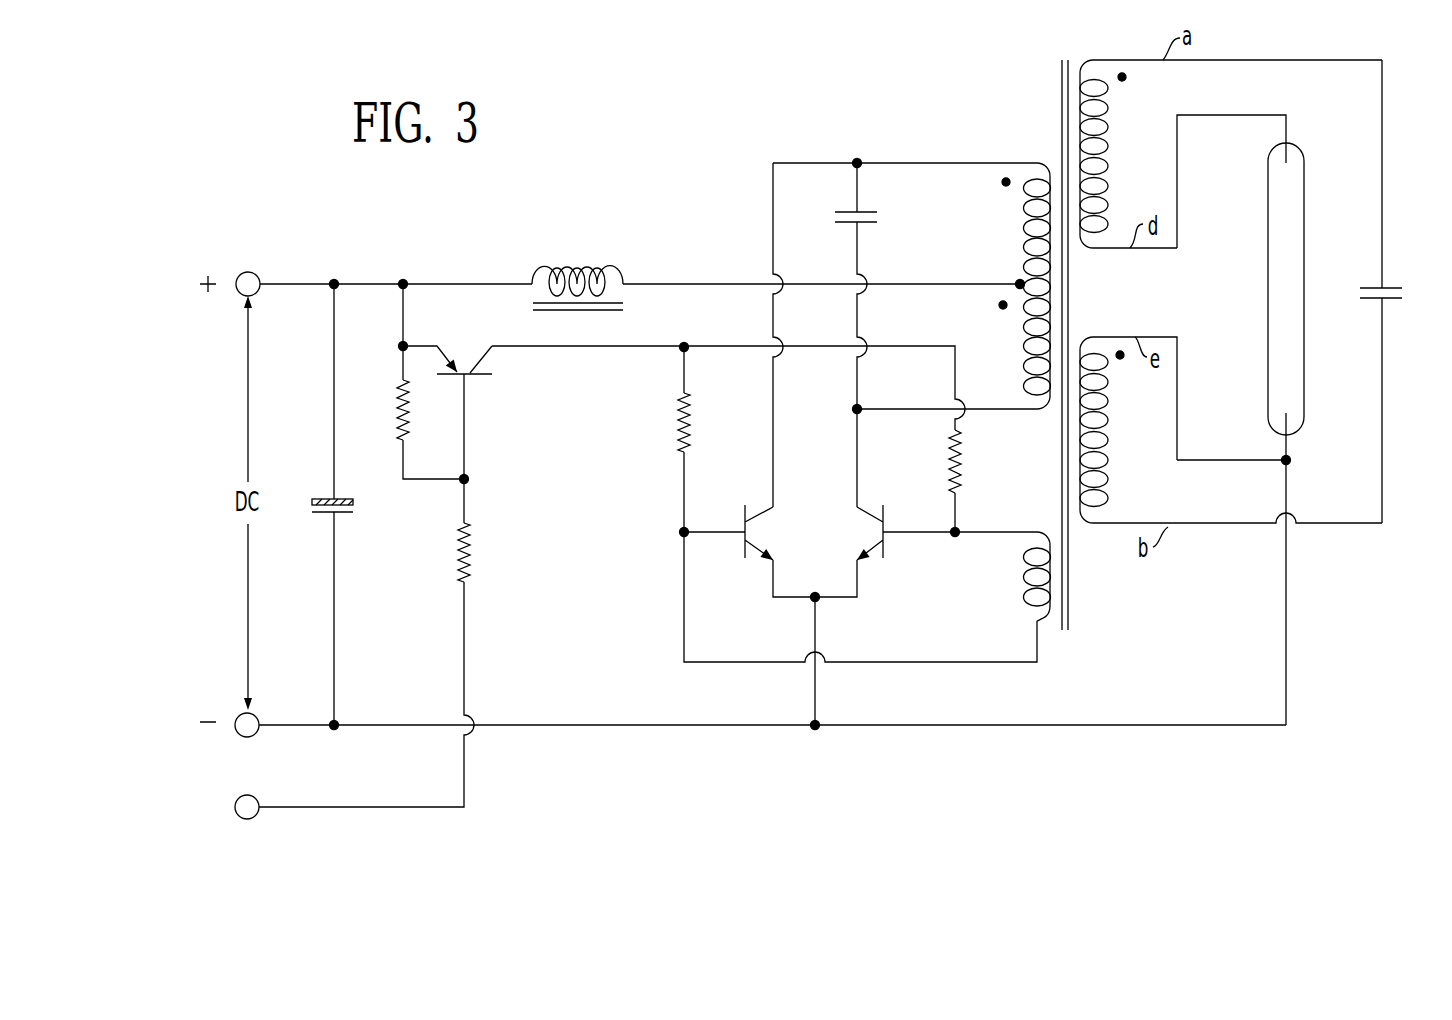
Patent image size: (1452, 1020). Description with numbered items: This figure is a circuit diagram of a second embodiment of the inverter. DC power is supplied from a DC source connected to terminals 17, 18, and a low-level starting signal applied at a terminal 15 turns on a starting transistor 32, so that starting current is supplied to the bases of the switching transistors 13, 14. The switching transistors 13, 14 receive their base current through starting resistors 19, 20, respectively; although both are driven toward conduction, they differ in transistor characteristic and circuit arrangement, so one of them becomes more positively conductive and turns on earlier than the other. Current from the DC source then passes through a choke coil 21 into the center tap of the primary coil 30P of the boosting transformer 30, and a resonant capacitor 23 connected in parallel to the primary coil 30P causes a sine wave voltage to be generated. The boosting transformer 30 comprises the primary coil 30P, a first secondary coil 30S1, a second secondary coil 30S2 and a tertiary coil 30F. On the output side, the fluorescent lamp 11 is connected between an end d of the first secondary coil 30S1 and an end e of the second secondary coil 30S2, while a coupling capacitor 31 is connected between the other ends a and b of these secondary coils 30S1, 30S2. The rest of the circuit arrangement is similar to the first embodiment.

The fluorescent lamp 11 is at (1265, 302).
The switching transistor 13 is at (742, 550).
The switching transistor 14 is at (887, 555).
The terminal 15 is at (233, 817).
The terminal 17 is at (240, 273).
The terminal 18 is at (233, 731).
The starting resistor 19 is at (677, 421).
The starting resistor 20 is at (958, 462).
The choke coil 21 is at (572, 266).
The resonant capacitor 23 is at (880, 215).
The boosting transformer 30 is at (1060, 95).
The primary coil 30P is at (1023, 227).
The first secondary coil 30S1 is at (1110, 500).
The second secondary coil 30S2 is at (1110, 107).
The tertiary coil 30F is at (1047, 623).
The coupling capacitor 31 is at (1407, 295).
The starting transistor 32 is at (463, 348).